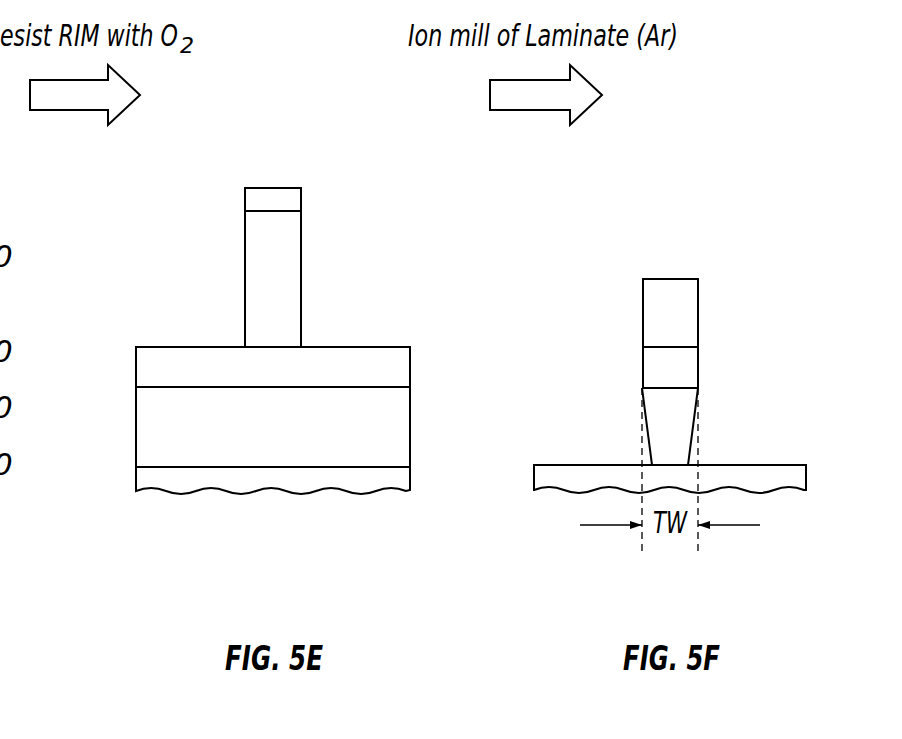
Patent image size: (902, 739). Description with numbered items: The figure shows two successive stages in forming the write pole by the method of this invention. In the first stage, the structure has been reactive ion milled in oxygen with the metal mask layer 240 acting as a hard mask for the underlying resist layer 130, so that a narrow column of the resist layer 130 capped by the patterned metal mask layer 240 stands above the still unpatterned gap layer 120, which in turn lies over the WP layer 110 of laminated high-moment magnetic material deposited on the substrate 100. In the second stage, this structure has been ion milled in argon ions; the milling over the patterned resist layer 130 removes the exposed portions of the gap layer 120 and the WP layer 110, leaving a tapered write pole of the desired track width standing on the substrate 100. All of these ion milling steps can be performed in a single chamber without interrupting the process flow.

In FIG. 5E, the substrate 100 is at (395, 480).
In FIG. 5F, the substrate 100 is at (793, 482).
In FIG. 5E, the WP layer 110 is at (395, 427).
In FIG. 5F, the WP layer 110 is at (687, 427).
In FIG. 5E, the gap layer 120 is at (395, 370).
In FIG. 5F, the gap layer 120 is at (687, 368).
In FIG. 5E, the resist layer 130 is at (293, 272).
In FIG. 5F, the resist layer 130 is at (687, 313).
In FIG. 5E, the metal mask layer 240 is at (293, 201).